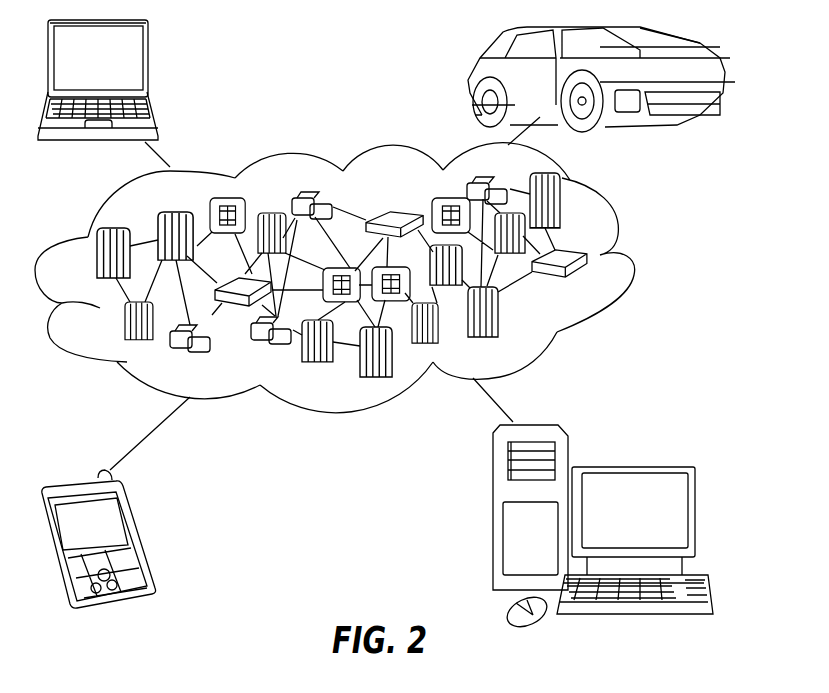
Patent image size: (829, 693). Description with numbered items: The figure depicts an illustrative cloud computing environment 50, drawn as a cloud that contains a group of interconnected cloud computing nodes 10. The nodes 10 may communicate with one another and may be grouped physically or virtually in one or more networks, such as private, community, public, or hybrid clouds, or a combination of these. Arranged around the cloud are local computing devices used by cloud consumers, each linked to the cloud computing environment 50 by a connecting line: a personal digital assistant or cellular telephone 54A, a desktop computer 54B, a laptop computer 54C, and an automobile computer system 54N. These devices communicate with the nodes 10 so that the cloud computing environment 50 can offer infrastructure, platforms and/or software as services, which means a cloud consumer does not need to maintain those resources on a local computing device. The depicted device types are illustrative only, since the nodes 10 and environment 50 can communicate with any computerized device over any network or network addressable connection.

The cloud computing node 10 is at (598, 289).
The cloud computing environment 50 is at (635, 260).
The personal digital assistant or cellular telephone 54A is at (149, 536).
The desktop computer 54B is at (632, 465).
The laptop computer 54C is at (152, 65).
The automobile computer system 54N is at (470, 77).